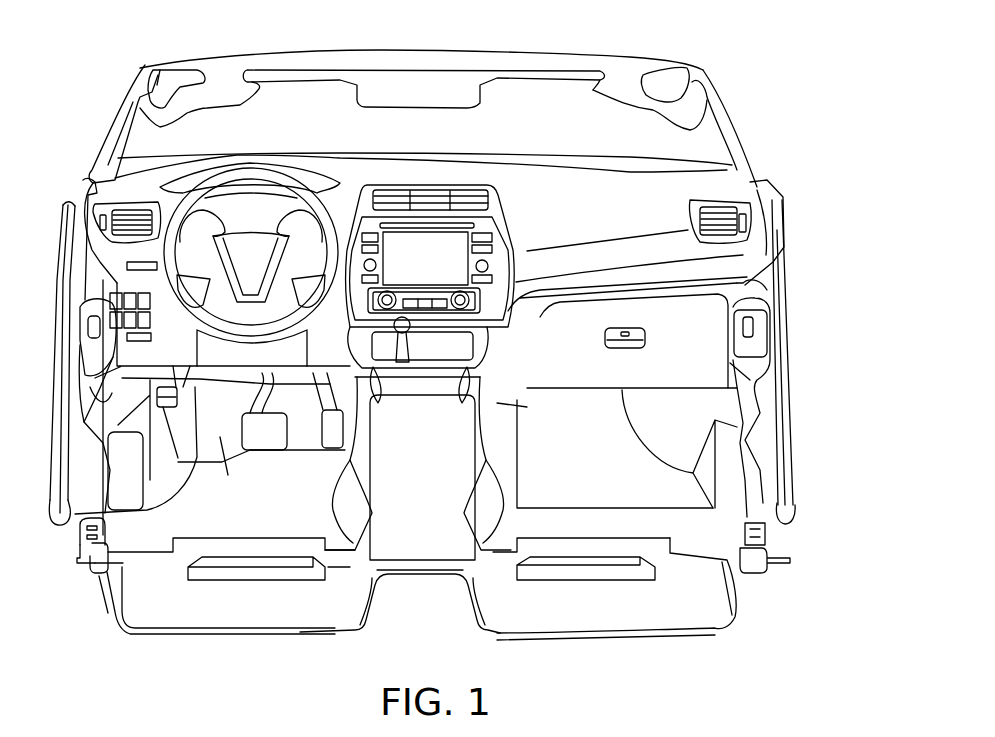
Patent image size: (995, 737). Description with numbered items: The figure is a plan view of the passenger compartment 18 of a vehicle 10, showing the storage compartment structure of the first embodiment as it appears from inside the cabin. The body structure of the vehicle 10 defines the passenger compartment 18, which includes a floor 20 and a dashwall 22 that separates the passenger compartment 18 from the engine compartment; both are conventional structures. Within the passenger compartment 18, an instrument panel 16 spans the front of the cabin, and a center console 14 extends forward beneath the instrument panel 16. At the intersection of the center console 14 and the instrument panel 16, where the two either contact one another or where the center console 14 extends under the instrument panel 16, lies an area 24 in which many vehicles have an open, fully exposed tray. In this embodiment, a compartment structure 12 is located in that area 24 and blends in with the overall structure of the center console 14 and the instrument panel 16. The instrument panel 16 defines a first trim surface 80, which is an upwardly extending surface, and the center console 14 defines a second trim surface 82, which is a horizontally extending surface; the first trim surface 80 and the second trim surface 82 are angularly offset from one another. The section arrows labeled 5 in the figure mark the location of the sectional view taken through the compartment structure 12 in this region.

The vehicle 10 is at (695, 38).
The compartment structure 12 is at (463, 342).
The center console 14 is at (480, 440).
The instrument panel 16 is at (588, 190).
The passenger compartment 18 is at (712, 403).
The floor 20 is at (128, 532).
The dashwall 22 is at (222, 440).
The area 24 is at (367, 343).
The first trim surface 80 is at (453, 327).
The second trim surface 82 is at (447, 375).
The section line for FIG. 5 is at (423, 298).